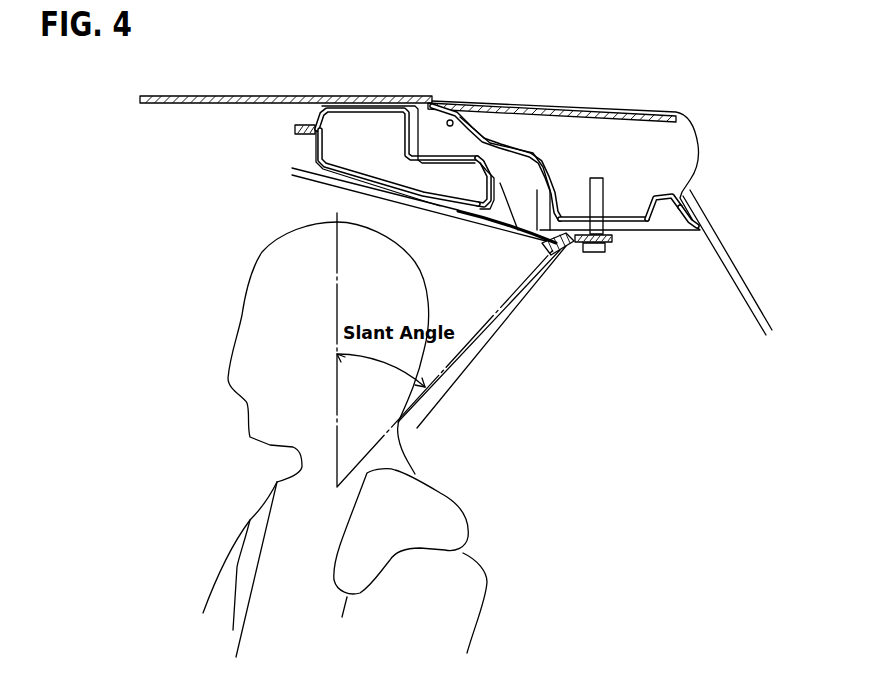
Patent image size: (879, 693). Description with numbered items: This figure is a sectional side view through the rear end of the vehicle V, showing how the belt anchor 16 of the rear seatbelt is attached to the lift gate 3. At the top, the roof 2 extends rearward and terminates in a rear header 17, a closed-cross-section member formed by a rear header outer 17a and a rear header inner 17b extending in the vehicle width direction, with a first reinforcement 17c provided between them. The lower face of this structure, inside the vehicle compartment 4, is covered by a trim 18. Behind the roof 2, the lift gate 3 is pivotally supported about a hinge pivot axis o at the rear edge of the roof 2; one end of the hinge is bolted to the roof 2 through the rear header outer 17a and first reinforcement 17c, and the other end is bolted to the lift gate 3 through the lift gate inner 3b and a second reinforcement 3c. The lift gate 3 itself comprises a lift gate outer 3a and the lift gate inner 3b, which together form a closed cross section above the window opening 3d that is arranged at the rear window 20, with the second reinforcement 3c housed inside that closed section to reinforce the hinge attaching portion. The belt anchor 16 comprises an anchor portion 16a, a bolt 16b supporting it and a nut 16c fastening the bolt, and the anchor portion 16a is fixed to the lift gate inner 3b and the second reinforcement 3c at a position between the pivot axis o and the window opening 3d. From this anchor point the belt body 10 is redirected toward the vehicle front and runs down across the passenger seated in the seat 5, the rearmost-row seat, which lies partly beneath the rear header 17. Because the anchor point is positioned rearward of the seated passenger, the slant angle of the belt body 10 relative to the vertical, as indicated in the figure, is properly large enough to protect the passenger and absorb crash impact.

The roof 2 is at (163, 96).
The lift gate 3 is at (702, 128).
The lift gate outer 3a is at (578, 110).
The lift gate inner 3b is at (650, 226).
The second reinforcement 3c is at (658, 196).
The window opening 3d is at (692, 221).
The vehicle compartment 4 is at (168, 205).
The seat 5 is at (513, 541).
The belt body 10 is at (248, 630).
The belt anchor 16 is at (595, 272).
The anchor portion 16a is at (545, 243).
The bolt 16b is at (605, 253).
The nut 16c is at (604, 215).
The rear header 17 is at (300, 108).
The rear header outer 17a is at (383, 112).
The rear header inner 17b is at (423, 191).
The first reinforcement 17c is at (333, 163).
The trim 18 is at (294, 176).
The rear window 20 is at (748, 290).
The vehicle V is at (268, 77).
The pivot axis o is at (452, 119).